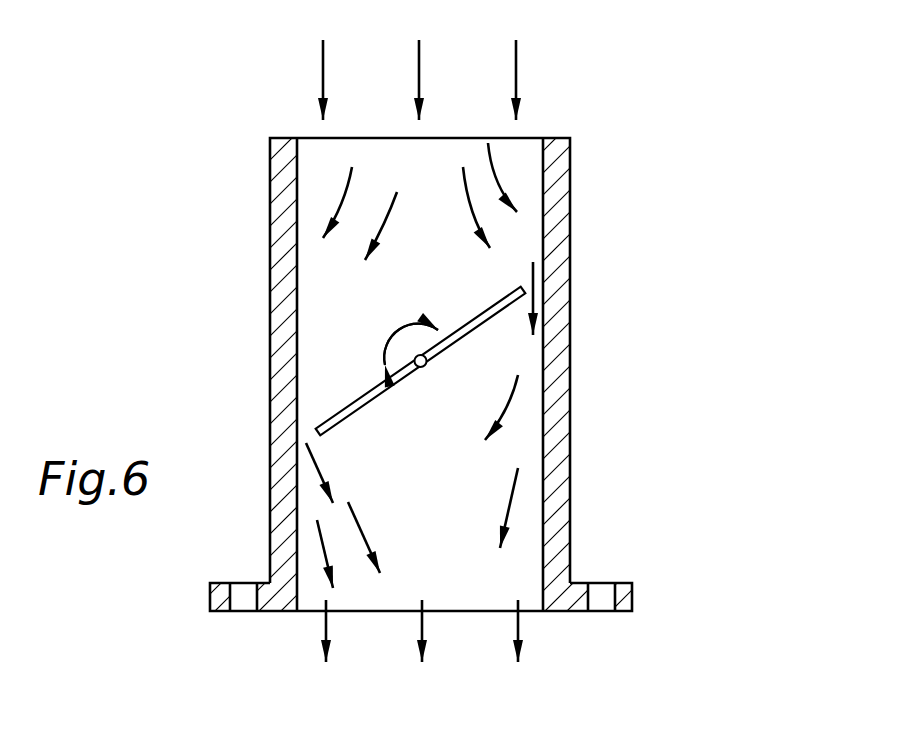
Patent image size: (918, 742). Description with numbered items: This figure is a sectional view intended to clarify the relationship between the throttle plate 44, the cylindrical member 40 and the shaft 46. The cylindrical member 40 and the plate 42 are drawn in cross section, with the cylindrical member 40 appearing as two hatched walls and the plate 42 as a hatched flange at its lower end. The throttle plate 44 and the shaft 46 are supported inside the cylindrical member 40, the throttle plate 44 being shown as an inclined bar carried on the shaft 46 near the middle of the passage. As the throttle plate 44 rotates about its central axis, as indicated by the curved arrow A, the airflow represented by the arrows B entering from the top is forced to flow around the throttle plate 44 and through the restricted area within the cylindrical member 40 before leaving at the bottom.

The cylindrical member 40 is at (570, 312).
The plate 42 is at (632, 597).
The throttle plate 44 is at (352, 408).
The shaft 46 is at (430, 366).
The arrow A is at (390, 342).
The arrows B is at (322, 62).